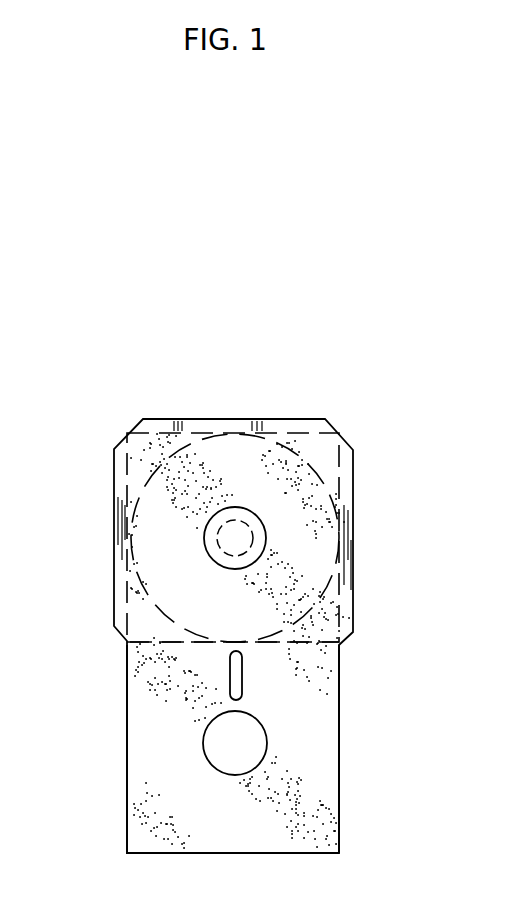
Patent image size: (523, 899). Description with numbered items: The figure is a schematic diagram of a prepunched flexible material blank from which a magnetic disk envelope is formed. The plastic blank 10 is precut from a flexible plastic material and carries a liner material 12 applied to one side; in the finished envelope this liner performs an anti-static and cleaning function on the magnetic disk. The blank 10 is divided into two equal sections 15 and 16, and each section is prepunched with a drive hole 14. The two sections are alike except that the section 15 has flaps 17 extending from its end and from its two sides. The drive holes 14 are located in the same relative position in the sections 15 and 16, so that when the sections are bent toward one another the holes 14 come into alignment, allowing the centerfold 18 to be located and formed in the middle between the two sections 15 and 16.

The plastic blank 10 is at (397, 482).
The liner material 12 is at (140, 795).
The drive hole 14 is at (263, 557).
The section 15 is at (128, 588).
The section 16 is at (338, 821).
The flaps 17 is at (196, 419).
The centerfold 18 is at (182, 643).